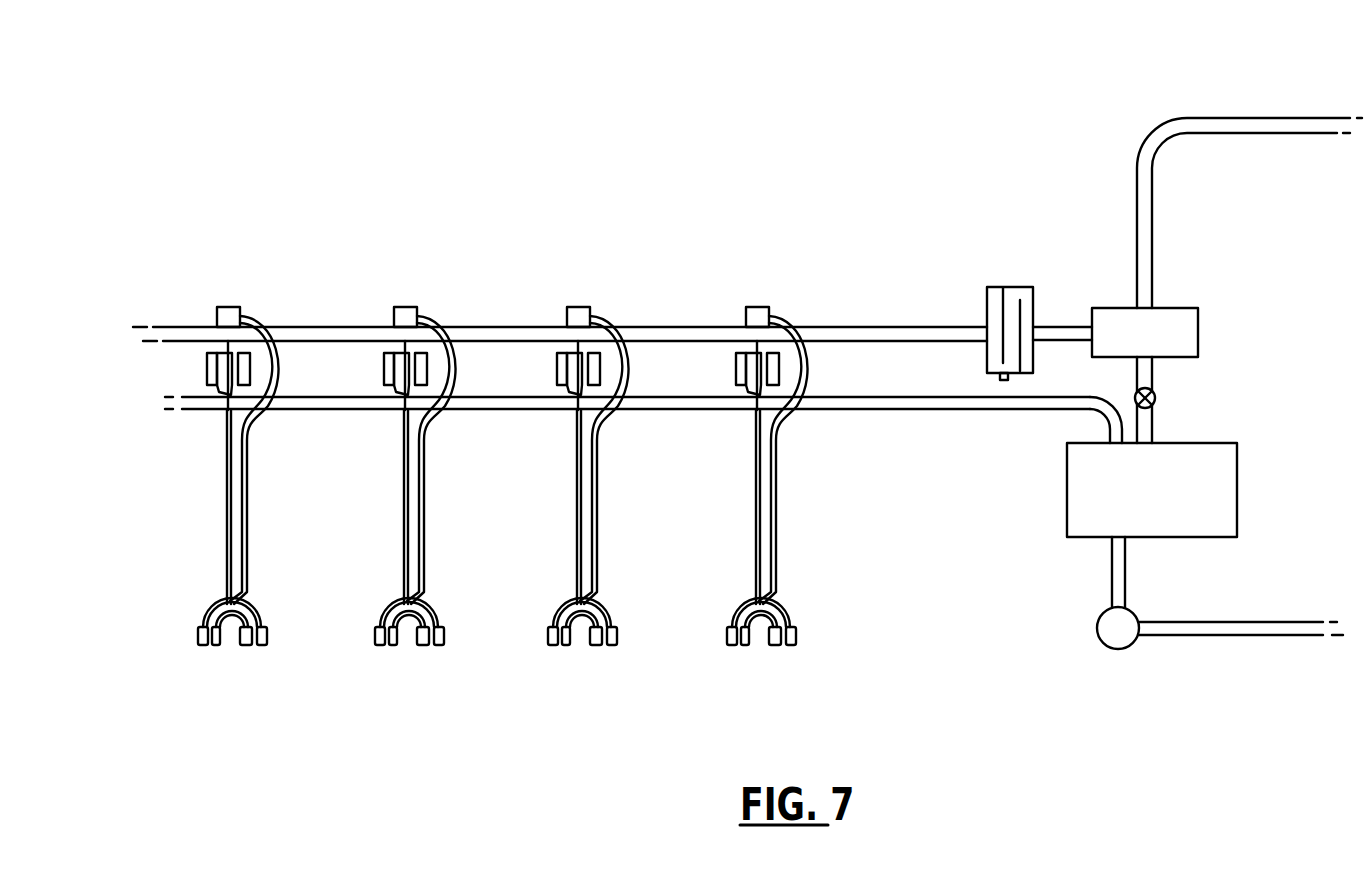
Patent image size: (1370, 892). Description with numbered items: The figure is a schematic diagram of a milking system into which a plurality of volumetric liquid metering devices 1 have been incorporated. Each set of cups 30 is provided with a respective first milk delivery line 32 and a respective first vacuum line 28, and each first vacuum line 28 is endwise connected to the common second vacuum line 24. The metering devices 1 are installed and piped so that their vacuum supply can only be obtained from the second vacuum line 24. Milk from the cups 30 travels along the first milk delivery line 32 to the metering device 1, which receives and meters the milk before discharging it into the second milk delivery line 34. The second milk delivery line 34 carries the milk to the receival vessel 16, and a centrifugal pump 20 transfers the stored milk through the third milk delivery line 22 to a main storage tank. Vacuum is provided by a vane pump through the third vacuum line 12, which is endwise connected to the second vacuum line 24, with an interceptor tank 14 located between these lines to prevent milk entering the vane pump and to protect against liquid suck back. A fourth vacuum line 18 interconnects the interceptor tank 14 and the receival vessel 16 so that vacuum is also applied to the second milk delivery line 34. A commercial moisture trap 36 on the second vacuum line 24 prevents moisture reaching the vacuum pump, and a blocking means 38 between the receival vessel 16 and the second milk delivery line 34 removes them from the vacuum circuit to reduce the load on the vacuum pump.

The volumetric liquid metering device 1 is at (206, 369).
The third vacuum line 12 is at (1243, 117).
The interceptor tank 14 is at (1200, 325).
The receival vessel 16 is at (1237, 476).
The fourth vacuum line 18 is at (1155, 428).
The centrifugal pump 20 is at (1125, 645).
The third milk delivery line 22 is at (1265, 638).
The second vacuum line 24 is at (870, 325).
The first vacuum line 28 is at (812, 370).
The set of cups 30 is at (776, 607).
The first milk delivery line 32 is at (757, 508).
The second milk delivery line 34 is at (870, 412).
The moisture trap 36 is at (1020, 285).
The blocking means 38 is at (1160, 396).